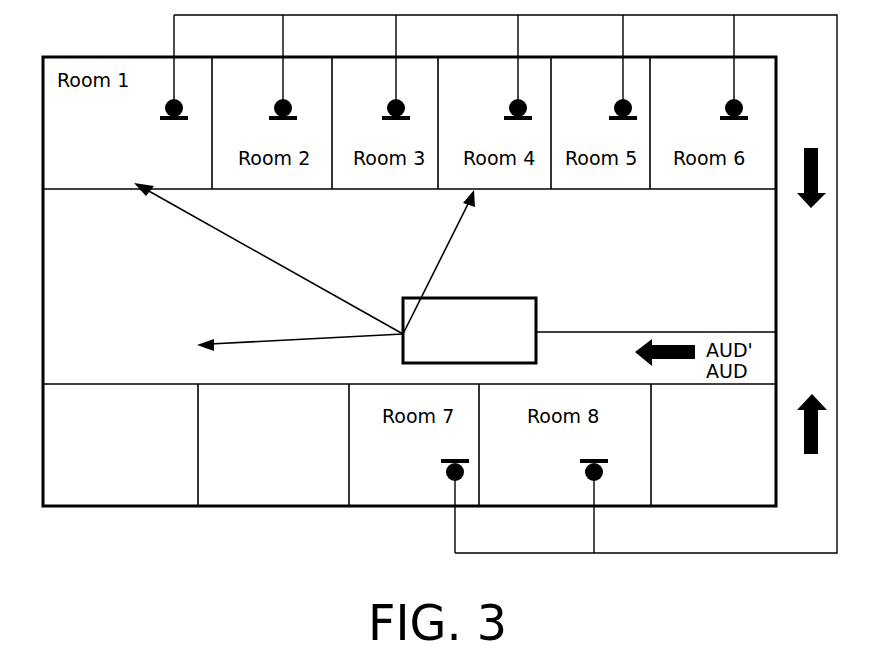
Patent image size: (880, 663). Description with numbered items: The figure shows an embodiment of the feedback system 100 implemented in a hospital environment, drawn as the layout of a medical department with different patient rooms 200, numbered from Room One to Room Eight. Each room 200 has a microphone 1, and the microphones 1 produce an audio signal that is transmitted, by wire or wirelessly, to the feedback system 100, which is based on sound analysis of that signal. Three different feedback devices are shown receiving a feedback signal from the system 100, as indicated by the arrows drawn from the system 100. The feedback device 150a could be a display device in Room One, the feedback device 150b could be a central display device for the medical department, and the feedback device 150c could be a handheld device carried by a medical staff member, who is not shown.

The microphone 1 is at (166, 106).
The feedback system 100 is at (469, 330).
The feedback device 150a is at (240, 245).
The feedback device 150b is at (467, 262).
The feedback device 150c is at (268, 345).
The patient room 200 is at (656, 93).